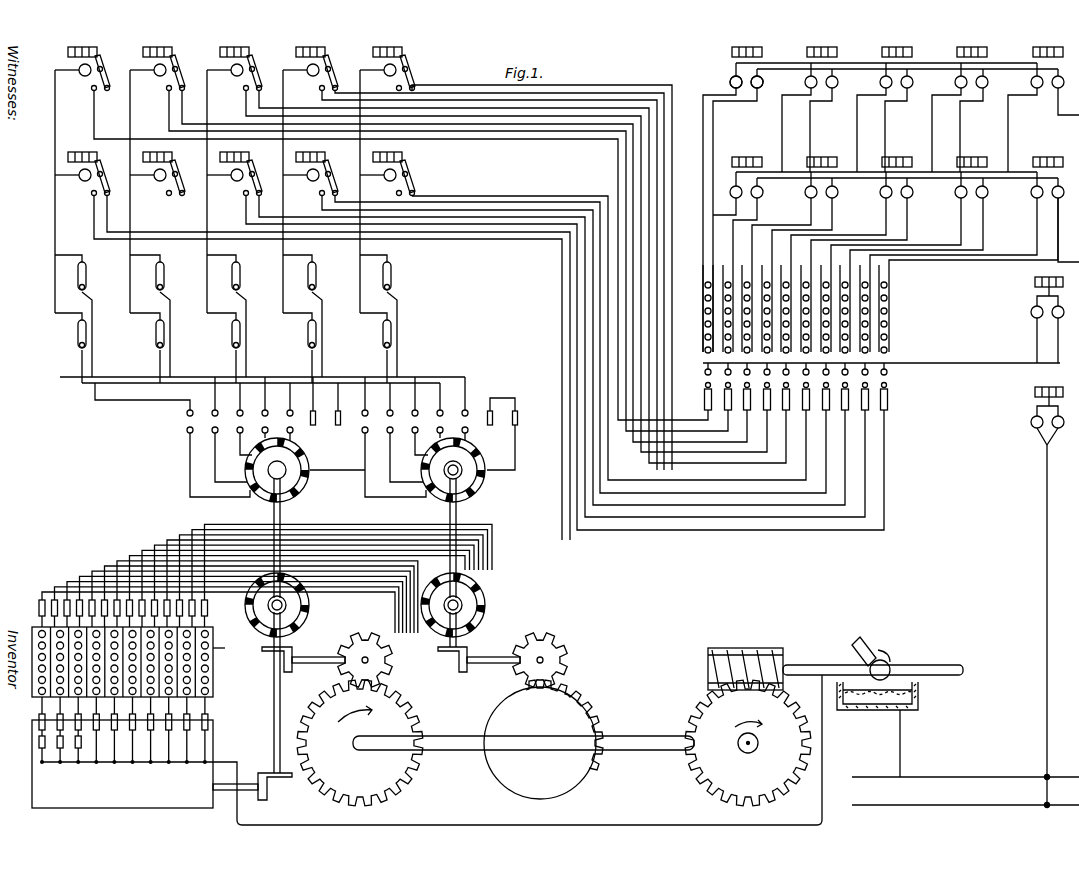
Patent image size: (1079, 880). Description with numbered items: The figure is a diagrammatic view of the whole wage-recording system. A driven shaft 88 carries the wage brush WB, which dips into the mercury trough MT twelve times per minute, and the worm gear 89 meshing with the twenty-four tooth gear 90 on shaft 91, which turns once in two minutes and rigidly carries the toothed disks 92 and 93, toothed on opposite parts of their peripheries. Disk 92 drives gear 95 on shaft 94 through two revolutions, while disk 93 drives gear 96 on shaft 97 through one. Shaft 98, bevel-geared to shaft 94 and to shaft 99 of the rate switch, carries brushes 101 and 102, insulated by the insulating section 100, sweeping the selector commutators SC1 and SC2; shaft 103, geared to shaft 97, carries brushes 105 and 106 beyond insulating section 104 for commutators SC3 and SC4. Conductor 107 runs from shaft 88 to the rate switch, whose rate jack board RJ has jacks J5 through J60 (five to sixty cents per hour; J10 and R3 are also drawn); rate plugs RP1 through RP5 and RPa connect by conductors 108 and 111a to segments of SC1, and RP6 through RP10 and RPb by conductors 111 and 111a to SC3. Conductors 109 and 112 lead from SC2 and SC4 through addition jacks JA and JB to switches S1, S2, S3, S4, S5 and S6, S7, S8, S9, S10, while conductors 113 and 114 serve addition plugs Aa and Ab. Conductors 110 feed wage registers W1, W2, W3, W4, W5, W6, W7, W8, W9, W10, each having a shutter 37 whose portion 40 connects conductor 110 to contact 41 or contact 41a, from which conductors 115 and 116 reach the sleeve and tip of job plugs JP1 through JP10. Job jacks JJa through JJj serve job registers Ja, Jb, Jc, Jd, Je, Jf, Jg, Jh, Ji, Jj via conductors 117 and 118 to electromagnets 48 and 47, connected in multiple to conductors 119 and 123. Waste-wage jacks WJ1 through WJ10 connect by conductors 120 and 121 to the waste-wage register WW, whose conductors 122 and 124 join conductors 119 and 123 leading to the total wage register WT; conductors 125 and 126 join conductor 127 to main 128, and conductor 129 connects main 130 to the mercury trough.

The shutter 37 is at (104, 60).
The portion of the shutter 40 is at (78, 81).
The contact 41 is at (110, 88).
The contact 41a is at (92, 92).
The conductor 110 is at (90, 139).
The conductors 115 is at (530, 112).
The conductors 116 is at (380, 255).
The electromagnet 47 is at (764, 82).
The electromagnet 48 is at (729, 82).
The conductor 117 is at (703, 132).
The conductor 118 is at (714, 122).
The conductor 123 is at (1068, 118).
The conductor 119 is at (1070, 247).
The conductor 124 is at (1035, 280).
The conductor 122 is at (1035, 293).
The conductor 120 is at (945, 364).
The conductor 121 is at (1020, 400).
The conductor 126 is at (1043, 447).
The conductor 125 is at (1046, 470).
The conductor 127 is at (1046, 603).
The electric main 128 is at (960, 808).
The conductor 129 is at (899, 764).
The main 130 is at (922, 777).
The conductor 109 is at (188, 457).
The conductors 111a is at (200, 555).
The conductors 111 is at (178, 533).
The conductor 108 is at (60, 586).
The brush 102 is at (283, 495).
The conductors 112 is at (350, 474).
The conductor 113 is at (336, 427).
The conductor 114 is at (515, 458).
The brush 106 is at (470, 478).
The shaft 103 is at (458, 538).
The brush 101 is at (285, 612).
The brush 105 is at (480, 612).
The insulating section 100 is at (287, 653).
The shaft 94 is at (318, 655).
The gear 95 is at (375, 645).
The gear 96 is at (556, 650).
The shaft 97 is at (490, 657).
The insulating section 104 is at (440, 645).
The shaft 98 is at (281, 689).
The shaft of the rate switch 99 is at (248, 777).
The disk 92 is at (398, 717).
The disk 93 is at (488, 782).
The shaft 91 is at (655, 737).
The gear 90 is at (696, 768).
The worm gear 89 is at (750, 648).
The shaft 88 is at (815, 660).
The conductor 107 is at (582, 827).
The wage register W1 is at (92, 80).
The wage register W2 is at (163, 69).
The wage register W3 is at (244, 69).
The wage register W4 is at (321, 69).
The wage register W5 is at (401, 68).
The wage register W6 is at (82, 175).
The wage register W7 is at (157, 175).
The wage register W8 is at (234, 175).
The wage register W9 is at (310, 175).
The wage register W10 is at (387, 174).
The switch S1 is at (93, 276).
The switch S2 is at (172, 276).
The switch S3 is at (248, 276).
The switch S4 is at (323, 276).
The switch S5 is at (399, 276).
The switch S6 is at (66, 334).
The switch S7 is at (143, 334).
The switch S8 is at (220, 334).
The switch S9 is at (295, 334).
The switch S10 is at (368, 334).
The job register Ja is at (729, 67).
The job register Jb is at (805, 66).
The job register Jc is at (880, 66).
The job register Jd is at (955, 66).
The job register Je is at (1032, 66).
The job register Jf is at (746, 167).
The job register Jg is at (821, 167).
The job register Jh is at (896, 167).
The job register Ji is at (971, 167).
The job register Jj is at (1047, 167).
The addition jack JA is at (186, 413).
The addition jack JB is at (455, 435).
The addition plug Aa is at (336, 415).
The addition plug Ab is at (503, 410).
The selector commutator SC1 is at (300, 590).
The selector commutator SC2 is at (300, 440).
The selector commutator SC3 is at (487, 590).
The selector commutator SC4 is at (468, 432).
The job jacks JJa is at (703, 330).
The job jacks JJj is at (890, 322).
The waste-wage jack WJ1 is at (693, 371).
The waste-wage jack WJ10 is at (889, 374).
The job plug JP1 is at (704, 400).
The job plug JP10 is at (892, 404).
The rate plug RP1 is at (42, 598).
The rate plug RP5 is at (92, 598).
The rate plug RP6 is at (107, 598).
The rate plug RP10 is at (155, 645).
The rate plug RPa is at (176, 614).
The rate plug RPb is at (209, 614).
The jacks J5 is at (132, 646).
The jacks J60 is at (230, 648).
The rate jack board RJ is at (206, 712).
The jack J10 is at (60, 750).
The resistance box R3 is at (122, 764).
The waste-wage register WW is at (1026, 281).
The total wage register WT is at (1020, 393).
The wage brush WB is at (871, 652).
The mercury trough MT is at (875, 711).